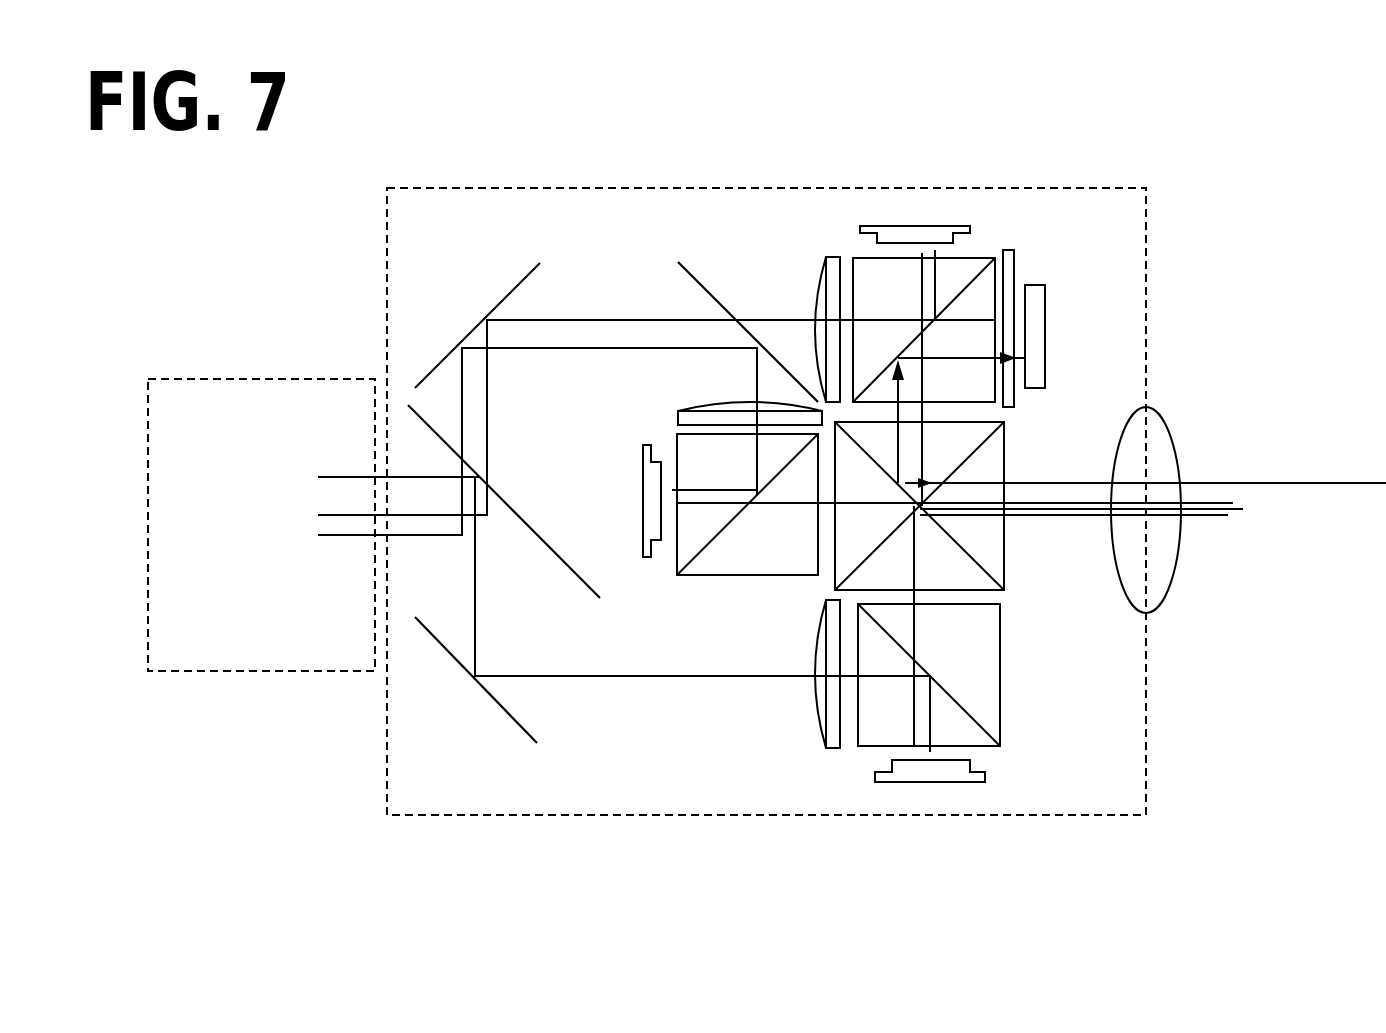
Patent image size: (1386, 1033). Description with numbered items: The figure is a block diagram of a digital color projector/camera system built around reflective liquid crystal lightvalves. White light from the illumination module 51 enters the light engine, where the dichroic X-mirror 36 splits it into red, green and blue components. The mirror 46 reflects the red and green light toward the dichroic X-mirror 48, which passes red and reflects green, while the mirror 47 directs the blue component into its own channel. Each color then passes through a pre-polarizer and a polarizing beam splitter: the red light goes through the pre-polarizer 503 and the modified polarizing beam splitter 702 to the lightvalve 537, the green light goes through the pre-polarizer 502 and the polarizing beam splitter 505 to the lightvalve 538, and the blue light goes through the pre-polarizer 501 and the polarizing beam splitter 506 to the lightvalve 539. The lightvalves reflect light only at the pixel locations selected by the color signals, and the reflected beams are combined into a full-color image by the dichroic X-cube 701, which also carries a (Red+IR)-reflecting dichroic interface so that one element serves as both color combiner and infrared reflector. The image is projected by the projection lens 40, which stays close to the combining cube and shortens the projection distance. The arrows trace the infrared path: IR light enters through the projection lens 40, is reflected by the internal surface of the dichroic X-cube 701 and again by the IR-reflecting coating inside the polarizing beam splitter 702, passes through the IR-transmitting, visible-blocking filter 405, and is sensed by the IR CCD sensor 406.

The illumination module 51 is at (148, 397).
The mirror 46 is at (483, 322).
The dichroic X-mirror 36 is at (545, 545).
The mirror 47 is at (502, 710).
The dichroic X-mirror 48 is at (712, 296).
The pre-polarizer 503 is at (820, 262).
The polarizing beam splitter 702 is at (985, 257).
The lightvalve 537 is at (972, 230).
The IR-transmitting, visible-blocking filter 405 is at (1017, 278).
The IR CCD sensor 406 is at (1047, 352).
The pre-polarizer 502 is at (680, 408).
The polarizing beam splitter 505 is at (746, 577).
The lightvalve 538 is at (647, 558).
The dichroic X-cube 701 is at (1005, 565).
The projection lens 40 is at (1173, 545).
The polarizing beam splitter 506 is at (1000, 700).
The pre-polarizer 501 is at (820, 722).
The lightvalve 539 is at (875, 775).